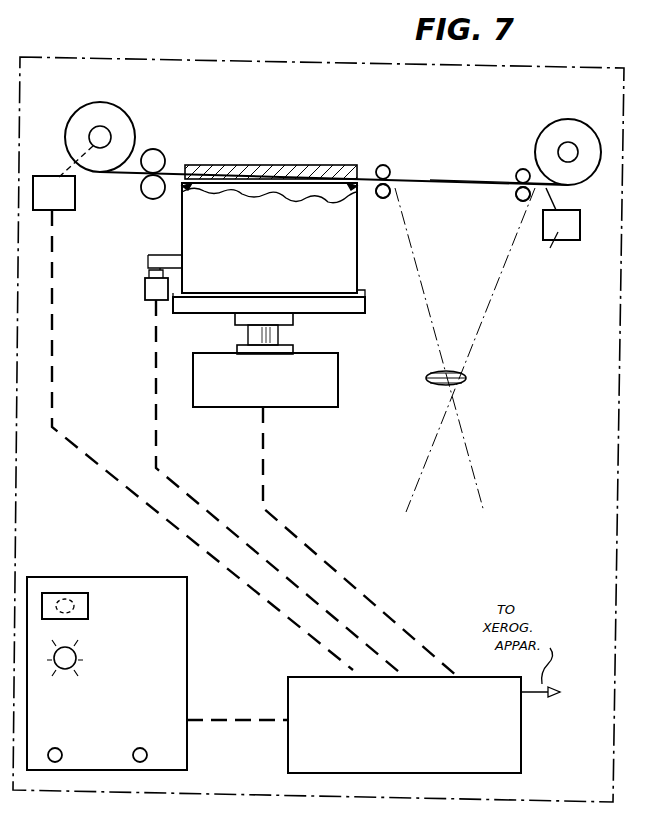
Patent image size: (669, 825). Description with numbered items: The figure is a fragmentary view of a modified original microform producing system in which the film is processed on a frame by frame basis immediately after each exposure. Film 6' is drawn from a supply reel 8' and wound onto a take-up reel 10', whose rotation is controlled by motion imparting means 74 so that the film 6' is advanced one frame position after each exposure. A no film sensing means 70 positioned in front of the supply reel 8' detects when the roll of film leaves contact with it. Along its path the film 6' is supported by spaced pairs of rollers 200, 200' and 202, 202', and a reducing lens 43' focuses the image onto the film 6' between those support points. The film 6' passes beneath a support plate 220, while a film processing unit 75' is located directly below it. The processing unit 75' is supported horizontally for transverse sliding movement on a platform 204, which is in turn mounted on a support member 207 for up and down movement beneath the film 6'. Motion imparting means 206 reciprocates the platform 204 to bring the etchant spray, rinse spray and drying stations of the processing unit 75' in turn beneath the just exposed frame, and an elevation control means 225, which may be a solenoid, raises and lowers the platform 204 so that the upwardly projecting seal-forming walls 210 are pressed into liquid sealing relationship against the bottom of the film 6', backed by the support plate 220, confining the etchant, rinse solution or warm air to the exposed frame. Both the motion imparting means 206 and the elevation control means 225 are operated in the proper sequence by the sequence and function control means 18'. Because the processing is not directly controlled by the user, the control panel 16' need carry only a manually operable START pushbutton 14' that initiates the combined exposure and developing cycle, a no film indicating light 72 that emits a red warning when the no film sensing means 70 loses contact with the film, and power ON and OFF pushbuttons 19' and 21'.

The take-up reel 10' is at (95, 129).
The motion imparting means 74 is at (50, 176).
The seal-forming walls 210 is at (176, 172).
The support plate 220 is at (290, 165).
The roller 202 is at (364, 155).
The roller 202' is at (377, 219).
The film 6' is at (493, 140).
The roller 200 is at (504, 168).
The roller 200' is at (487, 204).
The supply reel 8' is at (568, 136).
The no film sensing means 70 is at (580, 214).
The film processing unit 75' is at (235, 238).
The platform 204 is at (332, 302).
The motion imparting means 206 is at (147, 285).
The support member 207 is at (256, 334).
The elevation control means 225 is at (224, 404).
The reducing lens 43' is at (475, 380).
The control panel 16' is at (107, 650).
The START pushbutton 14' is at (58, 583).
The no film indicating light 72 is at (64, 670).
The power ON pushbutton 19' is at (74, 756).
The power OFF pushbutton 21' is at (155, 756).
The sequence and function control means 18' is at (376, 711).